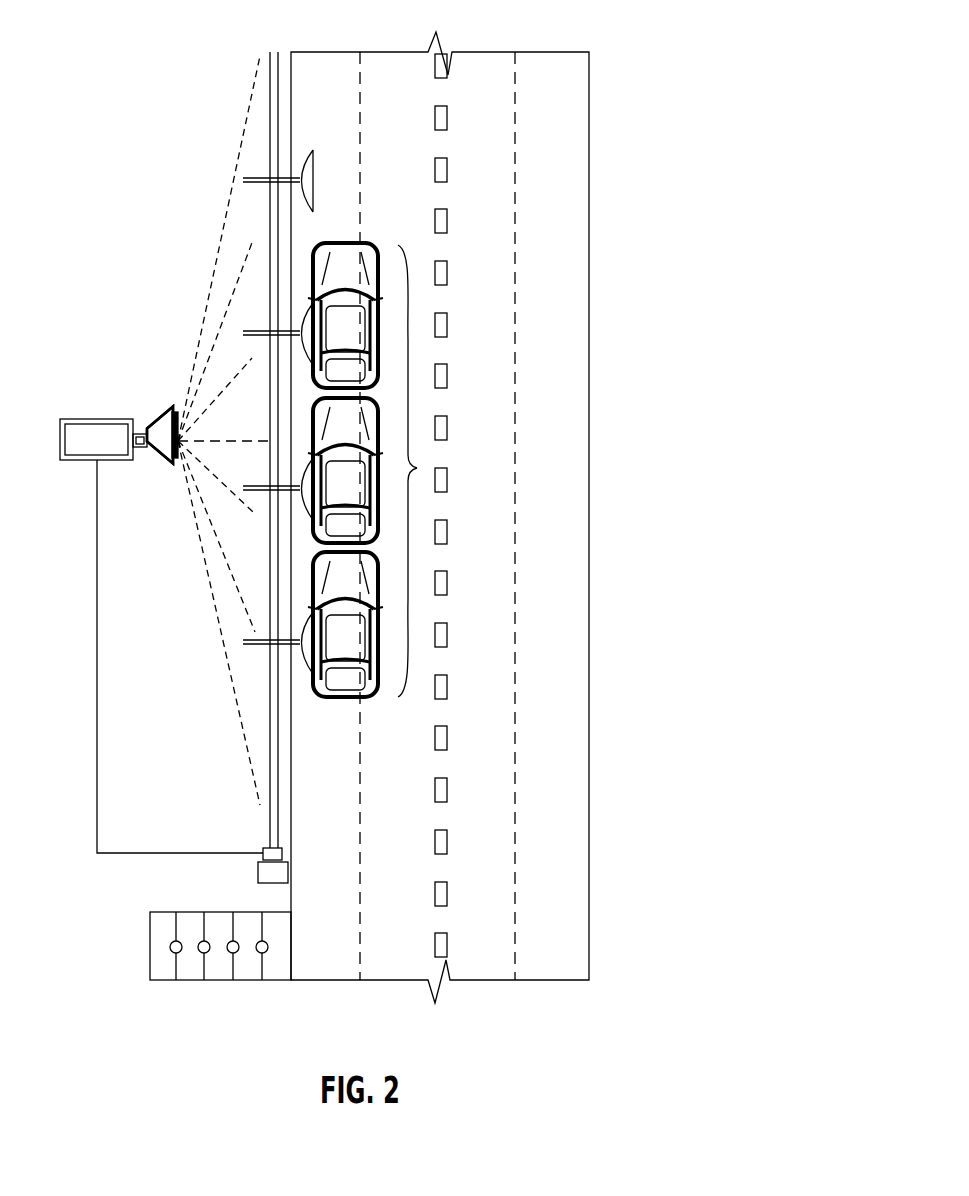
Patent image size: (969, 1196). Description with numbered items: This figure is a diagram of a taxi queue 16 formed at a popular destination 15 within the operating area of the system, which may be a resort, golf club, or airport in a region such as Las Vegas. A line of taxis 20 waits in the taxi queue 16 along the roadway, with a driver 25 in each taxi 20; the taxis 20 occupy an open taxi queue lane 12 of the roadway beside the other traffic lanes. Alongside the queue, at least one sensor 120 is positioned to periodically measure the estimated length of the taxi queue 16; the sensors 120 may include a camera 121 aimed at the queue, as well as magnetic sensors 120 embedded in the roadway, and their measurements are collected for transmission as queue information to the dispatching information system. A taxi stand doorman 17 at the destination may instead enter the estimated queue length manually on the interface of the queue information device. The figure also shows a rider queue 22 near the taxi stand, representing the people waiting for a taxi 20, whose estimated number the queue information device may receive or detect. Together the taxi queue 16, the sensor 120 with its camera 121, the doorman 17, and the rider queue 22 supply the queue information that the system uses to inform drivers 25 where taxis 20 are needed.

The open taxi queue lane 12 is at (339, 76).
The popular destination 15 is at (464, 839).
The taxi queue 16 is at (395, 470).
The taxi stand doorman 17 is at (253, 873).
The taxi 20 is at (378, 588).
The rider queue 22 is at (193, 969).
The driver 25 is at (384, 660).
The sensor 120 is at (229, 430).
The camera 121 is at (90, 418).